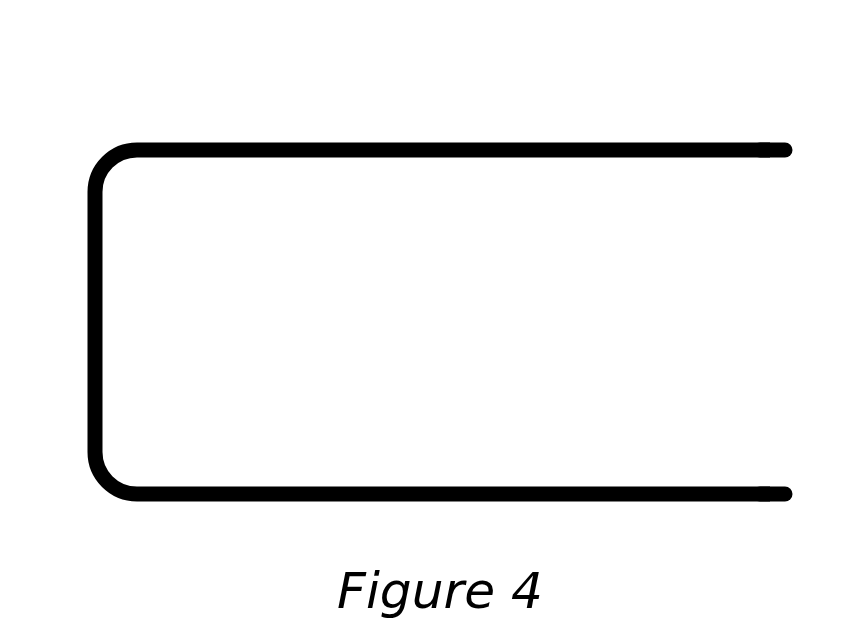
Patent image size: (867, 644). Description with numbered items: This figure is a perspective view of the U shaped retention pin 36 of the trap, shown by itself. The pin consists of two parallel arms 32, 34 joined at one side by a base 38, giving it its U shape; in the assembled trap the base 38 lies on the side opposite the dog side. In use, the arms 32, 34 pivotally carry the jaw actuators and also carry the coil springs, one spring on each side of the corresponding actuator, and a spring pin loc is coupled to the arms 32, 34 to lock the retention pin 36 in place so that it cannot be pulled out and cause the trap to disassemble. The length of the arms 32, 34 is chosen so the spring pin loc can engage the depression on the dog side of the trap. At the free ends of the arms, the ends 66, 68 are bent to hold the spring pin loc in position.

The U shaped retention pin 36 is at (88, 50).
The arm 32 is at (460, 143).
The arm 34 is at (460, 487).
The base 38 is at (102, 307).
The end of arm 66 is at (742, 158).
The end of arm 68 is at (735, 503).